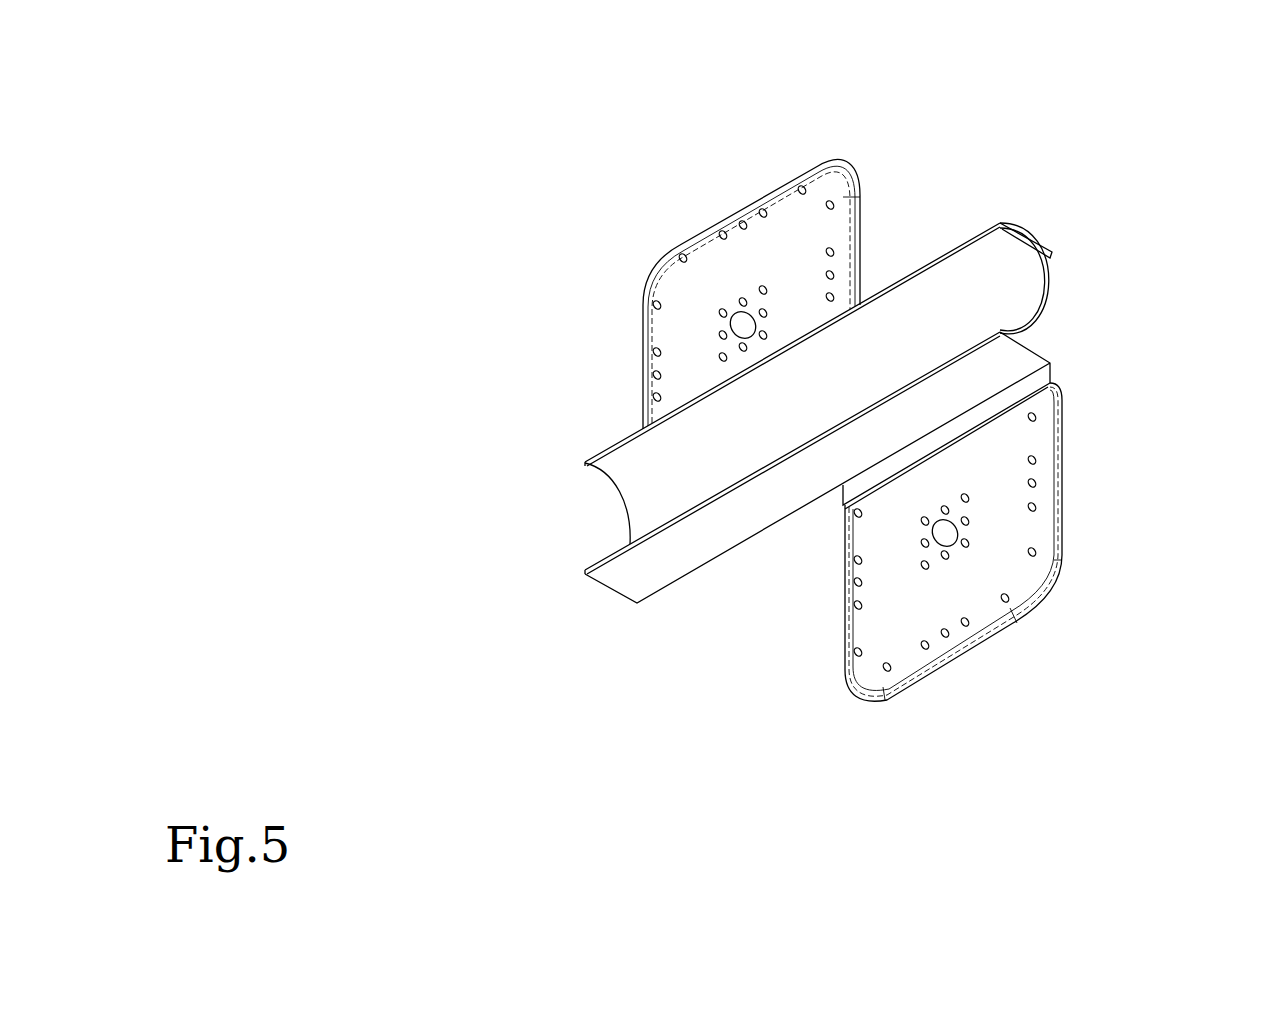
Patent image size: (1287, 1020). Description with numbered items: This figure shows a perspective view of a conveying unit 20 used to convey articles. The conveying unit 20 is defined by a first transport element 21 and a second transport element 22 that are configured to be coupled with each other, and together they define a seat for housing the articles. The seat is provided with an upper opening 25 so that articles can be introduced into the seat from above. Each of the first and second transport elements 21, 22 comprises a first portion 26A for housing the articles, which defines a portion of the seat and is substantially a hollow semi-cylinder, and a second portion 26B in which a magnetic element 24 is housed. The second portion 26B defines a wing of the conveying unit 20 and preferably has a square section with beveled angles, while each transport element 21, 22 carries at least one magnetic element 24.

The conveying unit 20 is at (1110, 615).
The first transport element 21 is at (683, 605).
The second transport element 22 is at (905, 228).
The magnetic element 24 is at (778, 220).
The upper opening 25 is at (628, 490).
The first portion 26A is at (983, 252).
The second portion 26B is at (645, 408).